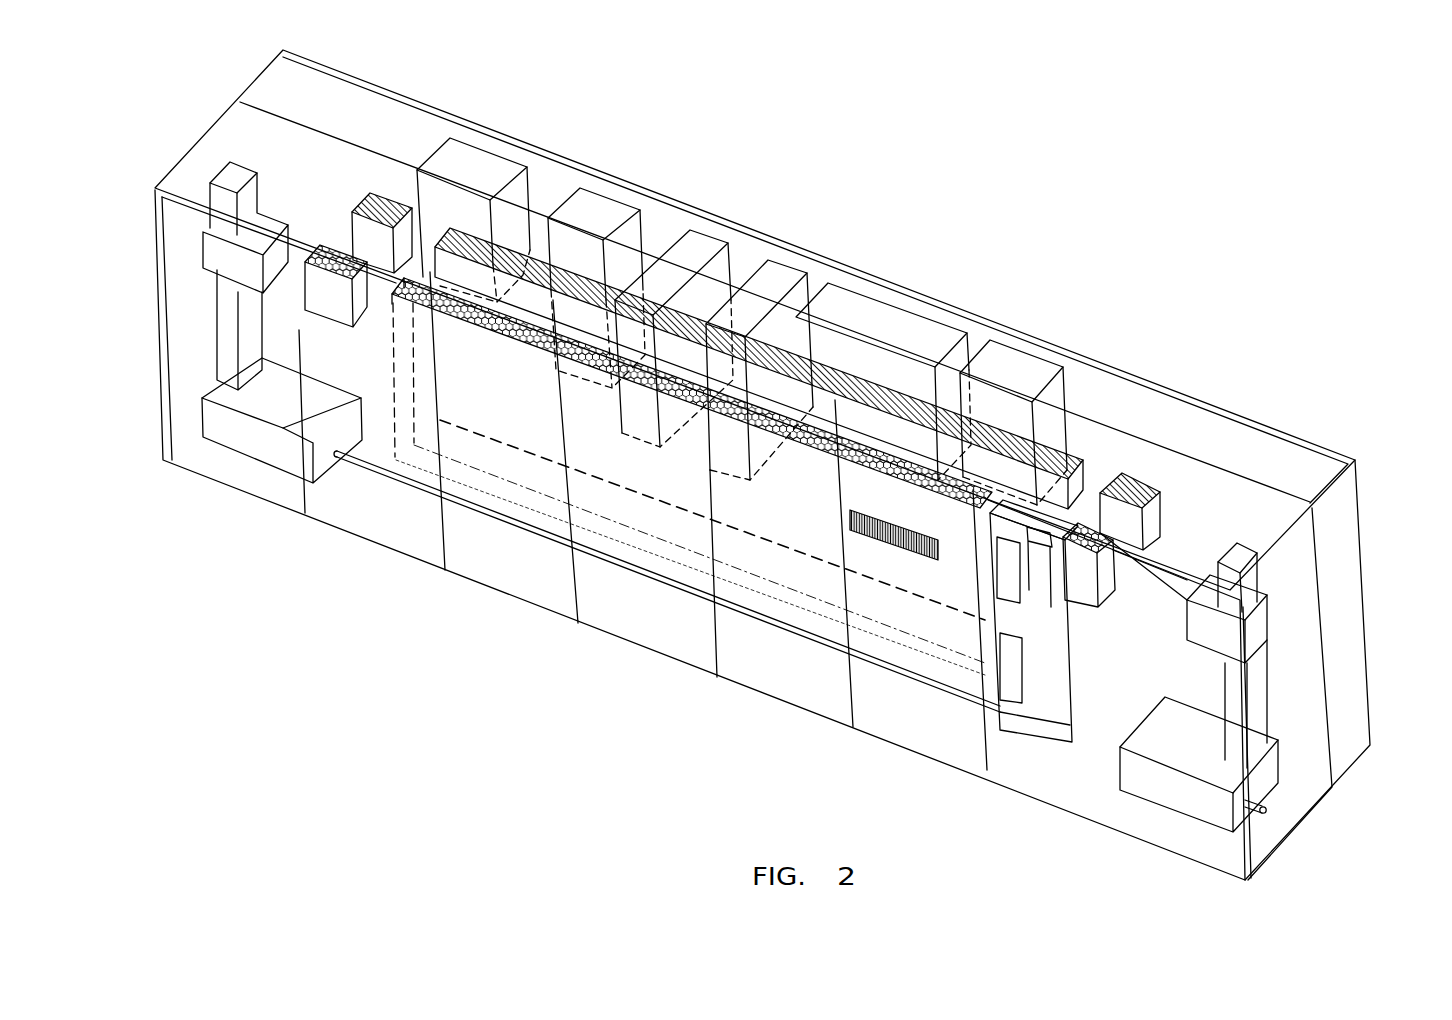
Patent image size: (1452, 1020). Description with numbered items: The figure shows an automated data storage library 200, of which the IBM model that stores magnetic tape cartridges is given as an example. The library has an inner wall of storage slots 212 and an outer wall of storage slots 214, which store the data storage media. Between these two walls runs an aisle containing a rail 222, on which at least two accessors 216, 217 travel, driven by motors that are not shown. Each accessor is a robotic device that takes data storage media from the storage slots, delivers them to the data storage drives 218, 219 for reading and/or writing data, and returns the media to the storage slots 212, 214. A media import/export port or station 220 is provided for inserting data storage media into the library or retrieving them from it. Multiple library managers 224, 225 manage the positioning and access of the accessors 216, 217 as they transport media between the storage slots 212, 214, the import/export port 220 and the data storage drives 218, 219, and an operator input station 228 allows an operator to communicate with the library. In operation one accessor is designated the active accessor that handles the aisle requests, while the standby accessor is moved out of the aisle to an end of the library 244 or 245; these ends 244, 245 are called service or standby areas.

The automated data storage library 200 is at (937, 222).
The end of the library 244 is at (188, 157).
The end of the library 245 is at (1357, 497).
The accessor 216 is at (220, 265).
The accessor 217 is at (1212, 632).
The library manager 224 is at (497, 170).
The inner wall of storage slots 212 is at (543, 280).
The operator input station 228 is at (617, 200).
The data storage drive 218 is at (695, 245).
The data storage drive 219 is at (781, 275).
The library manager 225 is at (1020, 365).
The media import/export port 220 is at (1052, 687).
The outer wall of storage slots 214 is at (397, 418).
The rail 222 is at (667, 583).